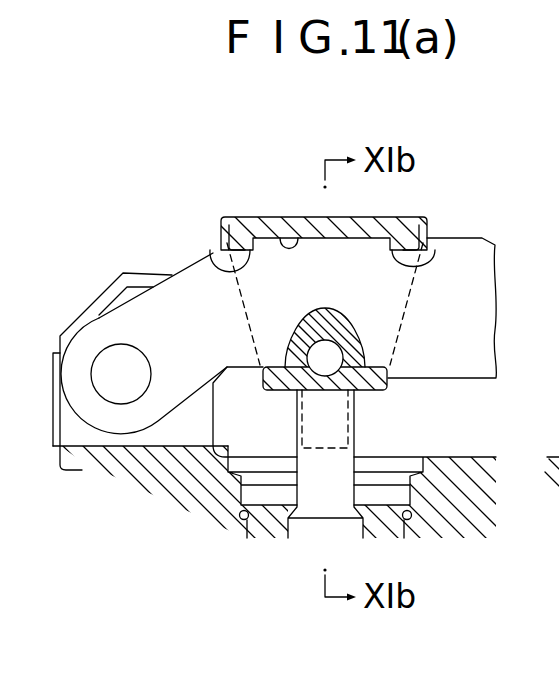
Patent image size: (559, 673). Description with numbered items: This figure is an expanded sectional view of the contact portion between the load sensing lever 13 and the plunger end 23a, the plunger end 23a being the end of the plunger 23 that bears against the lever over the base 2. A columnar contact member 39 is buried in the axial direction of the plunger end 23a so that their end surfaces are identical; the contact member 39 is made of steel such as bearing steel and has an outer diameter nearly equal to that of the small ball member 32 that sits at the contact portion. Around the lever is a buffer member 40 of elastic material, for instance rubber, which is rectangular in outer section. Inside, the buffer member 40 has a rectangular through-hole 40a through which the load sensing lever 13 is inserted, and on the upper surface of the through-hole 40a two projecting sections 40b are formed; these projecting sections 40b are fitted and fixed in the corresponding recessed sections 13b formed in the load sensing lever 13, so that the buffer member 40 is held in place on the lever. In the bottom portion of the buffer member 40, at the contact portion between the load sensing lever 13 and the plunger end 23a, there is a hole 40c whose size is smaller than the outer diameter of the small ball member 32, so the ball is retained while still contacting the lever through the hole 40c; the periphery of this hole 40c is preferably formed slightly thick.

The base 2 is at (281, 406).
The load sensing lever 13 is at (460, 288).
The recessed section 13b is at (228, 218).
The buffer member 40 is at (324, 240).
The through-hole 40a is at (282, 240).
The projecting section 40b is at (213, 253).
The hole 40c is at (345, 393).
The small ball member 32 is at (327, 356).
The pin 23 is at (327, 485).
The plunger end 23a is at (322, 423).
The contact member 39 is at (358, 438).